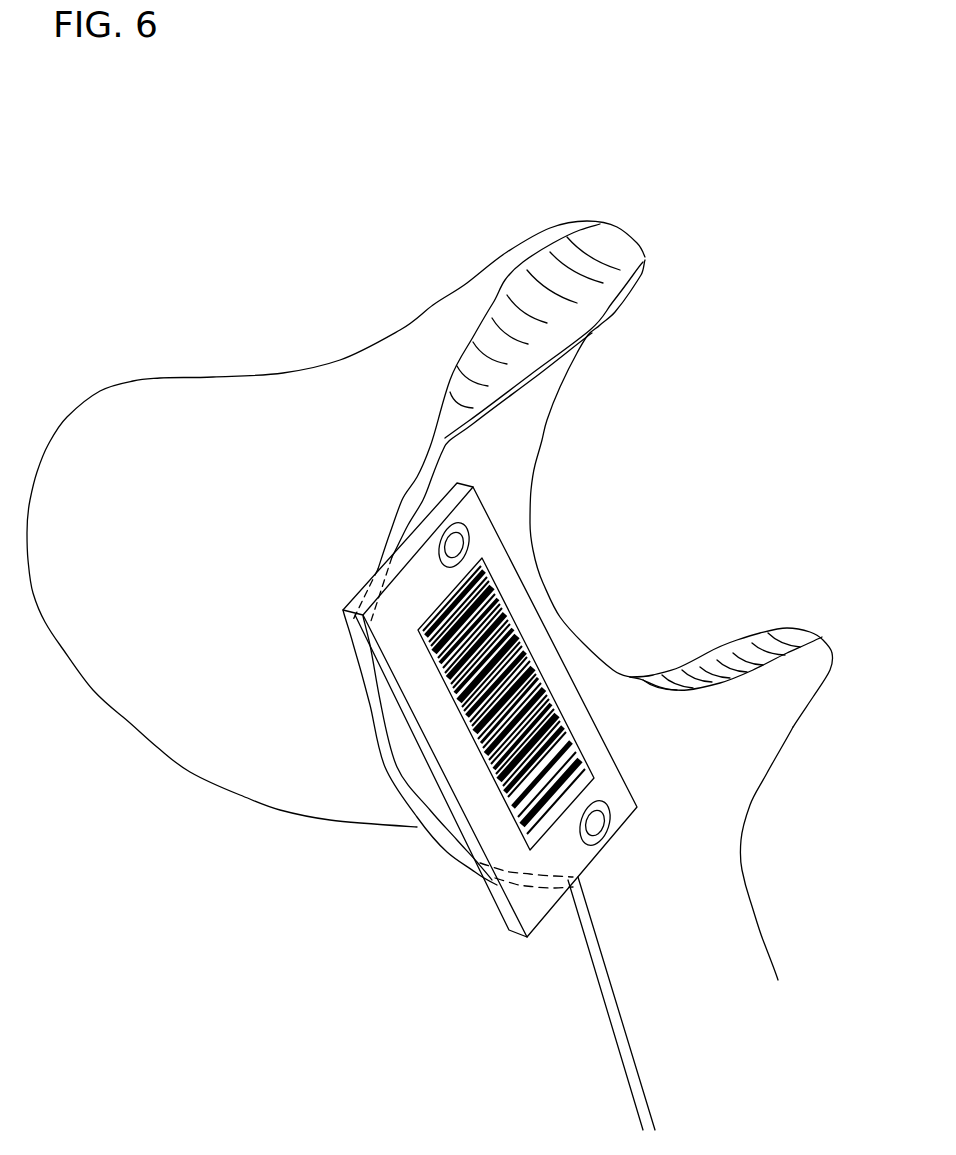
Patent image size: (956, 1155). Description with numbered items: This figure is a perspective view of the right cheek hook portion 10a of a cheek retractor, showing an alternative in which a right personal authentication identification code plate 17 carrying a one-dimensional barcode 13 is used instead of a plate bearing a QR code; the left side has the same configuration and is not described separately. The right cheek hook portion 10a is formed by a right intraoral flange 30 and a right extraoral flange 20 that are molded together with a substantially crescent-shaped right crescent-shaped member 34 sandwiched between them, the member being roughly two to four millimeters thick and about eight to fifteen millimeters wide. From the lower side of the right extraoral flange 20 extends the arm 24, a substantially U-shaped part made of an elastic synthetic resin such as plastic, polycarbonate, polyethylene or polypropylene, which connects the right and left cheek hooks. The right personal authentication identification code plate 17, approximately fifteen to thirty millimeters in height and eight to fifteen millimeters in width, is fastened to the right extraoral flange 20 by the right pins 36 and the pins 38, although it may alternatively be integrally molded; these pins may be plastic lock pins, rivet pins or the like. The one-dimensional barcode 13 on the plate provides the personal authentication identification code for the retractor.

The right cheek hook portion 10a is at (460, 157).
The one-dimensional barcode 13 is at (533, 673).
The right personal authentication identification code plate 17 is at (417, 583).
The right extraoral flange 20 is at (608, 710).
The arm 24 is at (698, 965).
The right intraoral flange 30 is at (212, 418).
The right crescent-shaped member 34 is at (553, 282).
The right pins 36 is at (457, 542).
The pins 38 is at (600, 828).